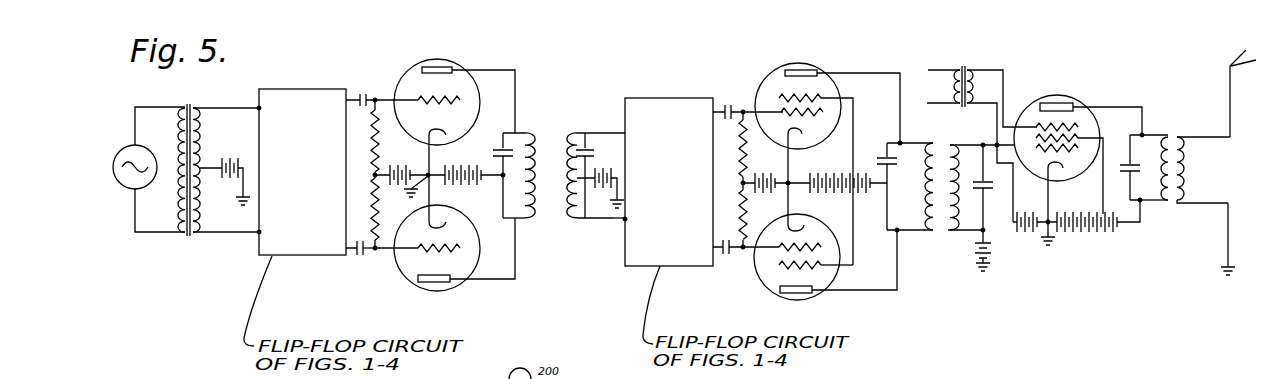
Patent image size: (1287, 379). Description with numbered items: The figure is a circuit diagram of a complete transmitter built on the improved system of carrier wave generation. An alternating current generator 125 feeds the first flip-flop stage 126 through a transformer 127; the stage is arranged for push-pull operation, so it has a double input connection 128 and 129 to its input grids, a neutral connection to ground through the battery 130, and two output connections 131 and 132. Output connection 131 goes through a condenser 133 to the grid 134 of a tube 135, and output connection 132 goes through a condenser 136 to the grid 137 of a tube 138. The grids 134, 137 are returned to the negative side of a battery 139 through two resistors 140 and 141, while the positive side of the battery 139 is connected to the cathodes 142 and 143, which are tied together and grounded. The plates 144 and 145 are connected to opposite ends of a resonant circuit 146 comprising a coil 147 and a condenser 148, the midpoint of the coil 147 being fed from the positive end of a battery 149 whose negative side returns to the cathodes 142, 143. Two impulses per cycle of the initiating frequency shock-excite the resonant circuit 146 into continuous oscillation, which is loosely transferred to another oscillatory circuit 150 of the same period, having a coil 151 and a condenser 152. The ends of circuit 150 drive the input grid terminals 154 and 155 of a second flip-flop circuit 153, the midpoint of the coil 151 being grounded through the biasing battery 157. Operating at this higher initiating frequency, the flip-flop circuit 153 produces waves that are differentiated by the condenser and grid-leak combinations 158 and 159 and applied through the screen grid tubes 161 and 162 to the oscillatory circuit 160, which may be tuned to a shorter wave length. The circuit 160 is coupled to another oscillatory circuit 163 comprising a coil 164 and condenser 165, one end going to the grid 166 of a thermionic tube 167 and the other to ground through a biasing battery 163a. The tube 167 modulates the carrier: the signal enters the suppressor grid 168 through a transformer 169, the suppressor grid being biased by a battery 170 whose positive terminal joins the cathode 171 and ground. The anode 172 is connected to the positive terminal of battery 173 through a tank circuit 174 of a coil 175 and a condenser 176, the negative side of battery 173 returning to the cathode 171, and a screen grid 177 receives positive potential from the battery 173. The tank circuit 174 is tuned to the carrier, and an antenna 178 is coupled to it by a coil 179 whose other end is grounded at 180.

The alternating current generator 125 is at (124, 193).
The first flip-flop stage 126 is at (319, 256).
The transformer 127 is at (189, 240).
The input connection 128 is at (257, 107).
The input connection 129 is at (257, 234).
The battery 130 is at (231, 158).
The output connection 131 is at (358, 93).
The output connection 132 is at (354, 257).
The condenser 133 is at (365, 90).
The grid 134 is at (441, 98).
The tube 135 is at (431, 60).
The condenser 136 is at (364, 258).
The grid 137 is at (424, 253).
The tube 138 is at (430, 291).
The battery 139 is at (404, 164).
The resistor 140 is at (372, 129).
The resistor 141 is at (369, 215).
The cathode 142 is at (446, 133).
The cathode 143 is at (442, 223).
The plate 144 is at (445, 67).
The plate 145 is at (435, 283).
The resonant circuit 146 is at (526, 132).
The coil 147 is at (528, 217).
The condenser 148 is at (516, 131).
The battery 149 is at (478, 150).
The oscillatory circuit 150 is at (559, 130).
The coil 151 is at (572, 220).
The condenser 152 is at (588, 148).
The second flip-flop circuit 153 is at (678, 98).
The input grid terminal 154 is at (626, 128).
The input grid terminal 155 is at (621, 221).
The biasing battery 157 is at (608, 168).
The condenser and grid-leak combination 158 is at (734, 104).
The condenser and grid-leak combination 159 is at (733, 257).
The oscillatory circuit 160 is at (901, 138).
The screen grid tube 161 is at (820, 63).
The screen grid tube 162 is at (783, 295).
The oscillatory circuit 163 is at (968, 223).
The biasing battery 163a is at (998, 250).
The coil 164 is at (952, 145).
The condenser 165 is at (988, 191).
The grid 166 is at (1068, 158).
The thermionic tube 167 is at (1062, 101).
The suppressor grid 168 is at (1031, 122).
The transformer 169 is at (963, 65).
The battery 170 is at (1026, 238).
The cathode 171 is at (1046, 172).
The anode 172 is at (1076, 96).
The battery 173 is at (1082, 237).
The tank circuit 174 is at (1152, 132).
The coil 175 is at (1150, 200).
The condenser 176 is at (1128, 163).
The screen grid 177 is at (1066, 139).
The antenna 178 is at (1245, 67).
The coil 179 is at (1186, 181).
The ground 180 is at (1232, 266).